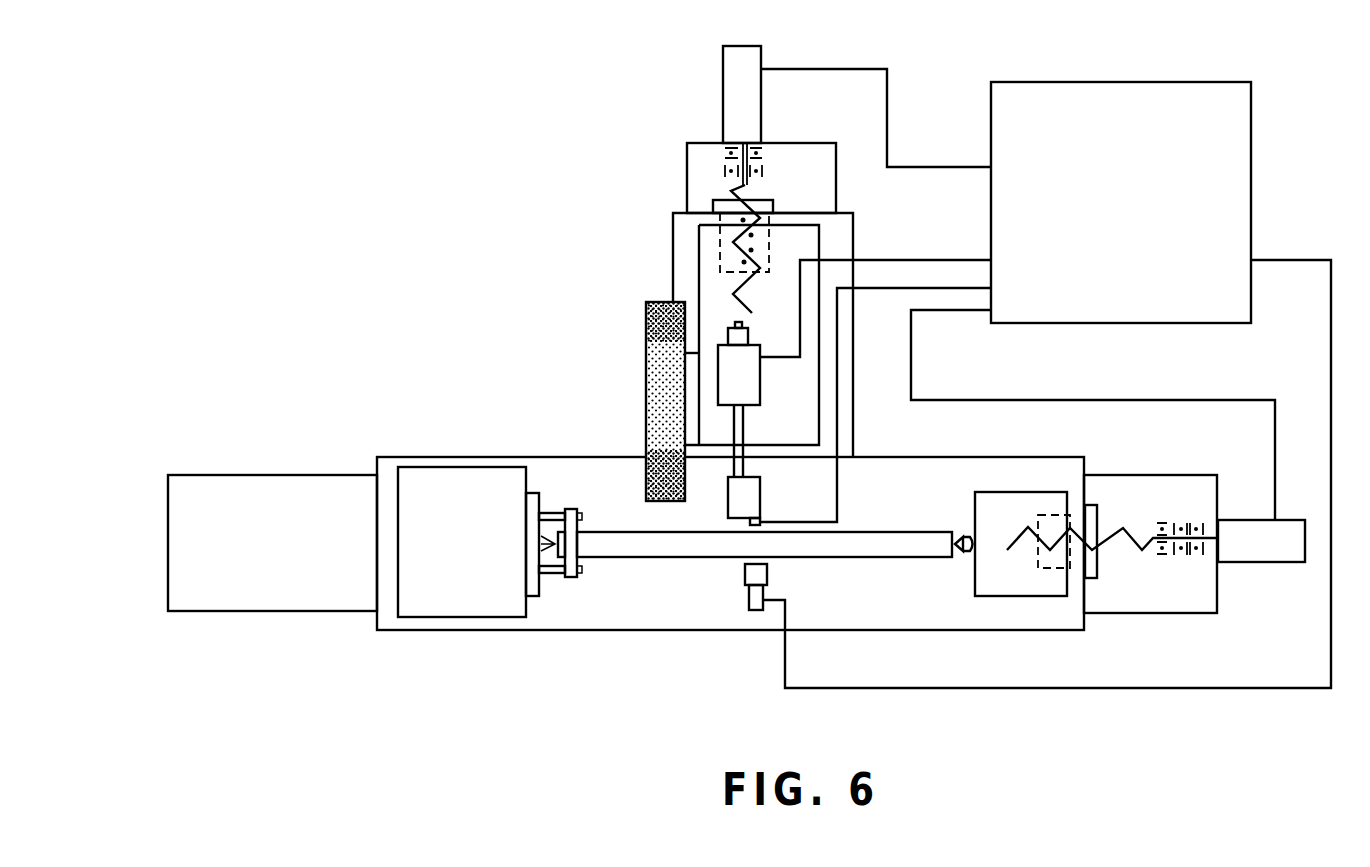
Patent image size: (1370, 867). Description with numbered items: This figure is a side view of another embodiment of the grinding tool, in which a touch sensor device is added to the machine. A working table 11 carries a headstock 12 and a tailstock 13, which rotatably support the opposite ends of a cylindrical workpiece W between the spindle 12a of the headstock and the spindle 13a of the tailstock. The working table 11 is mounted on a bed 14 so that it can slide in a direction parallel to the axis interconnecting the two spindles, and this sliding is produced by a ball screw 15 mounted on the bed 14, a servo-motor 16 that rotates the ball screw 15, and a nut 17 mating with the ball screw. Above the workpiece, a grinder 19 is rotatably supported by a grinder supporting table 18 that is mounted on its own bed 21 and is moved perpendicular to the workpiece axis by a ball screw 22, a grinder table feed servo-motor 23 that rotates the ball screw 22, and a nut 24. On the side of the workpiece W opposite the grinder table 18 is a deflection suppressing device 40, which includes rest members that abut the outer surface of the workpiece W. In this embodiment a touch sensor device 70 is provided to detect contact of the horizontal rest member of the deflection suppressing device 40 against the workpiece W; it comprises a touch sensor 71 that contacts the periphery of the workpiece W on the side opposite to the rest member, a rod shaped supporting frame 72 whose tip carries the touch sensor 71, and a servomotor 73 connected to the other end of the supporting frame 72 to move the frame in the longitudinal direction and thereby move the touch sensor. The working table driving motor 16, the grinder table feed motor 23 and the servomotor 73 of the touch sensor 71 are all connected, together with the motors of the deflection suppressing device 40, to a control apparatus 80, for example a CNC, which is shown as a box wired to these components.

The working table 11 is at (656, 632).
The headstock 12 is at (462, 467).
The spindle of the headstock 12a is at (558, 563).
The cylindrical workpiece W is at (617, 531).
The tailstock 13 is at (975, 503).
The spindle of the tailstock 13a is at (968, 553).
The bed 14 is at (1134, 613).
The ball screw 15 is at (1138, 531).
The servo-motor 16 is at (1268, 562).
The nut 17 is at (1040, 568).
The grinder supporting table 18 is at (812, 232).
The grinder 19 is at (646, 348).
The bed 21 is at (855, 240).
The ball screw 22 is at (746, 292).
The grinder table feed servo-motor 23 is at (723, 75).
The nut 24 is at (772, 200).
The deflection suppressing device 40 is at (745, 575).
The touch sensor device 70 is at (745, 432).
The touch sensor 71 is at (760, 497).
The supporting frame 72 is at (733, 467).
The servomotor 73 is at (760, 375).
The control apparatus 80 is at (1251, 148).